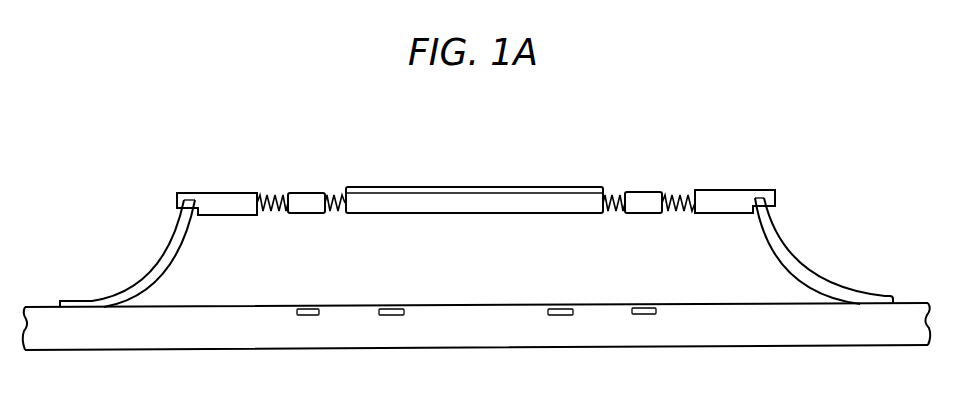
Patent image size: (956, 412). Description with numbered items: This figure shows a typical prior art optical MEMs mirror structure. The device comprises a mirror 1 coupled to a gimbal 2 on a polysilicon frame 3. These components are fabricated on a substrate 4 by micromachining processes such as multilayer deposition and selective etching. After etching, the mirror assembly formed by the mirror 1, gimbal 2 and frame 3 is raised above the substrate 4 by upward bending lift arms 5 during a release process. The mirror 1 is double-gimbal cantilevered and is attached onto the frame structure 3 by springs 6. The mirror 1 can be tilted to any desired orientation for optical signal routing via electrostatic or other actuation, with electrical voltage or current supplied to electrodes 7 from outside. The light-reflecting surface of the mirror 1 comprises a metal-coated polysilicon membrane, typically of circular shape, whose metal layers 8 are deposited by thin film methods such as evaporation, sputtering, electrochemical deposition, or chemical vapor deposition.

The mirror 1 is at (495, 198).
The gimbal 2 is at (641, 192).
The polysilicon frame 3 is at (731, 191).
The substrate 4 is at (735, 333).
The lift arms 5 is at (147, 270).
The springs 6 is at (272, 194).
The electrodes 7 is at (307, 316).
The metal layers 8 is at (388, 187).